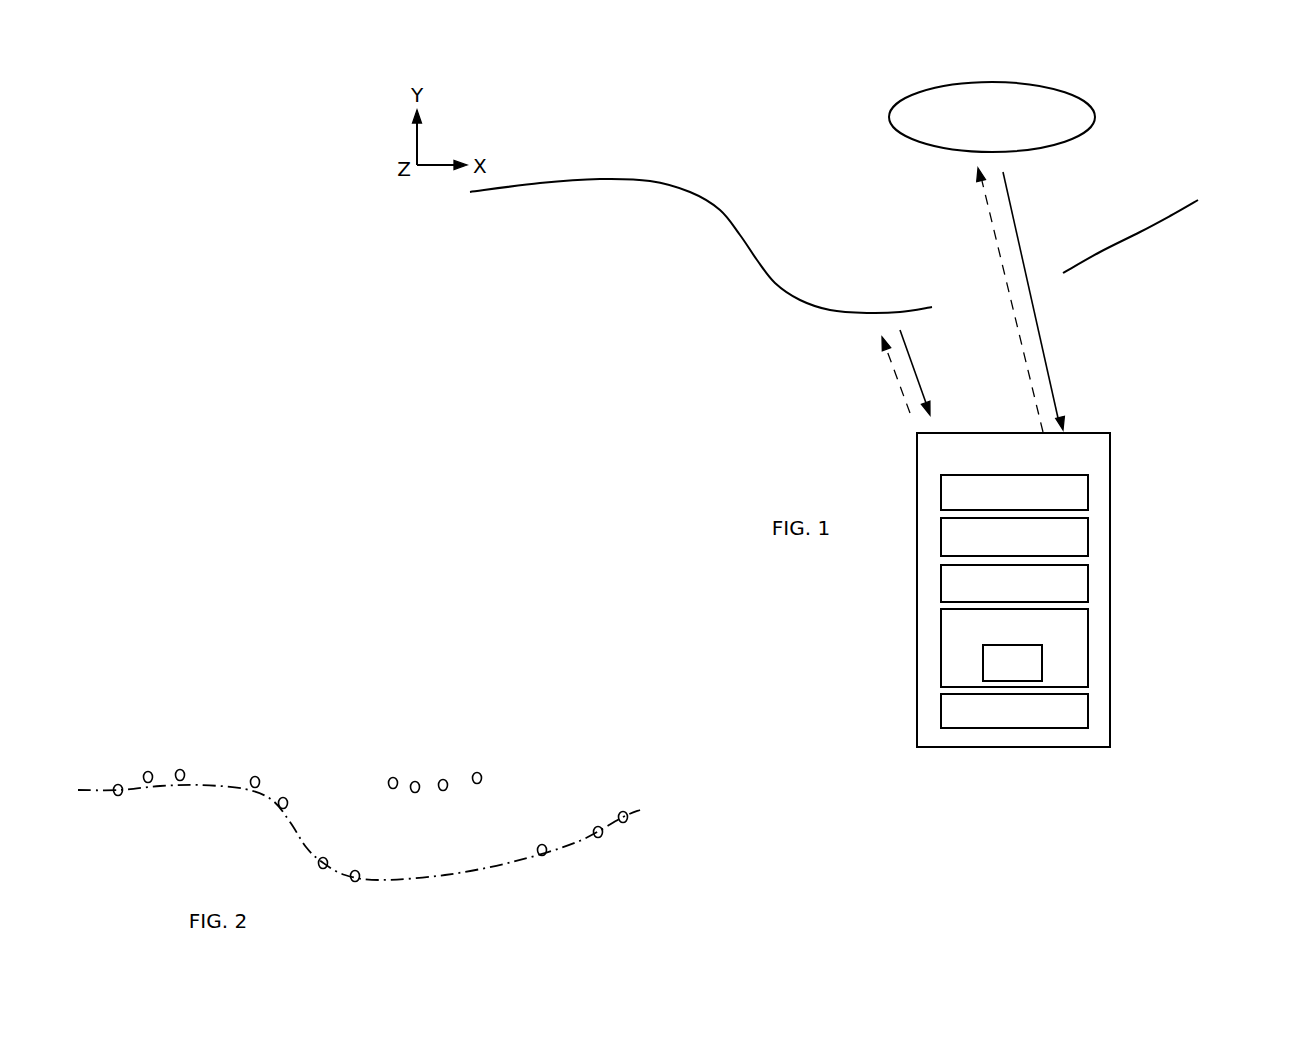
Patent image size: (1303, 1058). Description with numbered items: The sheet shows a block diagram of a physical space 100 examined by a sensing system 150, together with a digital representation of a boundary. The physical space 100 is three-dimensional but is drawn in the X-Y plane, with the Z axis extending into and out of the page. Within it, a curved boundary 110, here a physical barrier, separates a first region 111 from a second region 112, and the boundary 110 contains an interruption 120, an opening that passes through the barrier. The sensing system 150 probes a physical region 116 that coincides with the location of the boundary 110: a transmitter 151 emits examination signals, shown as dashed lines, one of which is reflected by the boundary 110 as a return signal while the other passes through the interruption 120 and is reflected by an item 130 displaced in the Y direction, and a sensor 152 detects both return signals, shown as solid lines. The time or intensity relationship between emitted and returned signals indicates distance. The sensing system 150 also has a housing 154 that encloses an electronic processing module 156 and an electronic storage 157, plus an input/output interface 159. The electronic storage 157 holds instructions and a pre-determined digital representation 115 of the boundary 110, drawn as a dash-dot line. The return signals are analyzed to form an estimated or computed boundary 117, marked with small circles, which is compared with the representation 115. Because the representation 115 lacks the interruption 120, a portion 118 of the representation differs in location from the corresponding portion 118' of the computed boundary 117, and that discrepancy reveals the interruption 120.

In FIG. 1, the physical space 100 is at (853, 56).
In FIG. 1, the boundary 110 is at (1160, 229).
In FIG. 1, the first region 111 is at (744, 128).
In FIG. 1, the second region 112 is at (662, 349).
In FIG. 1, the digital representation 115 is at (1012, 663).
In FIG. 2, the digital representation 115 is at (525, 857).
In FIG. 1, the physical region 116 is at (673, 204).
In FIG. 2, the estimated or computed boundary 117 is at (281, 797).
In FIG. 2, the portion of the representation 118 is at (359, 867).
In FIG. 2, the portion of the estimated or computed boundary 118' is at (462, 760).
In FIG. 1, the interruption 120 is at (940, 280).
In FIG. 1, the item 130 is at (992, 117).
In FIG. 1, the sensing system 150 is at (1013, 590).
In FIG. 1, the transmitter 151 is at (1014, 492).
In FIG. 1, the sensor 152 is at (1014, 537).
In FIG. 1, the housing 154 is at (1110, 548).
In FIG. 1, the electronic processing module 156 is at (1014, 583).
In FIG. 1, the electronic storage 157 is at (1014, 648).
In FIG. 1, the input/output interface 159 is at (1014, 711).